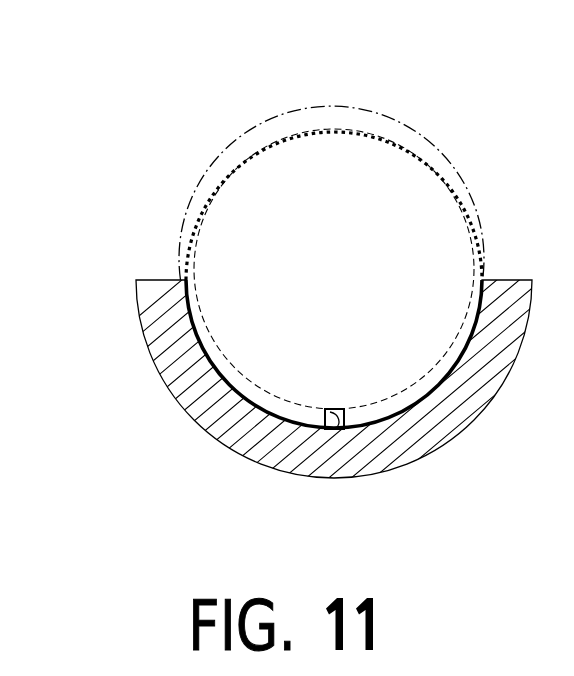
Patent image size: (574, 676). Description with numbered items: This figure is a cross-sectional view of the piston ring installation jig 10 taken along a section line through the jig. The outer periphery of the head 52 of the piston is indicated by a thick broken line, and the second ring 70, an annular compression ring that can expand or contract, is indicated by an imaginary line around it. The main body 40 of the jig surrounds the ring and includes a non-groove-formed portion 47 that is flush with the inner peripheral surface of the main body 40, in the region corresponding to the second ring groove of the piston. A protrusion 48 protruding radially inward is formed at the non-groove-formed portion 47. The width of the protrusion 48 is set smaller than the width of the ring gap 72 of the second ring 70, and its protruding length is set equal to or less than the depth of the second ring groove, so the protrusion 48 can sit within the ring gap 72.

The piston ring installation jig 10 is at (126, 206).
The main body 40 is at (178, 398).
The non-groove-formed portion 47 is at (323, 416).
The protrusion 48 is at (341, 410).
The head 52 is at (328, 121).
The second ring 70 is at (222, 153).
The ring gap 72 is at (329, 408).